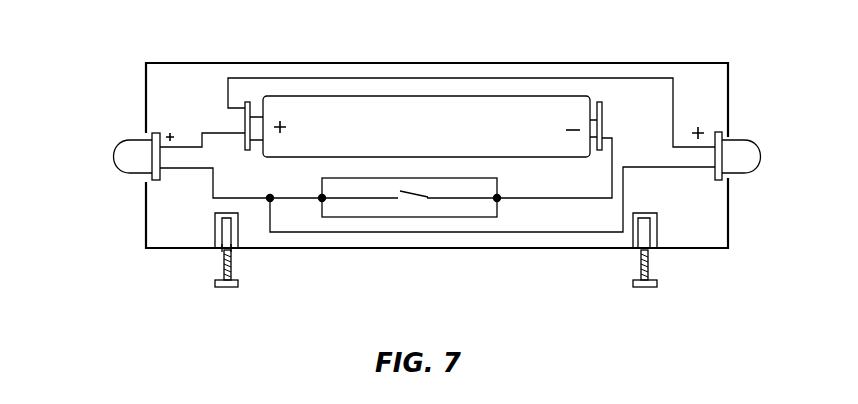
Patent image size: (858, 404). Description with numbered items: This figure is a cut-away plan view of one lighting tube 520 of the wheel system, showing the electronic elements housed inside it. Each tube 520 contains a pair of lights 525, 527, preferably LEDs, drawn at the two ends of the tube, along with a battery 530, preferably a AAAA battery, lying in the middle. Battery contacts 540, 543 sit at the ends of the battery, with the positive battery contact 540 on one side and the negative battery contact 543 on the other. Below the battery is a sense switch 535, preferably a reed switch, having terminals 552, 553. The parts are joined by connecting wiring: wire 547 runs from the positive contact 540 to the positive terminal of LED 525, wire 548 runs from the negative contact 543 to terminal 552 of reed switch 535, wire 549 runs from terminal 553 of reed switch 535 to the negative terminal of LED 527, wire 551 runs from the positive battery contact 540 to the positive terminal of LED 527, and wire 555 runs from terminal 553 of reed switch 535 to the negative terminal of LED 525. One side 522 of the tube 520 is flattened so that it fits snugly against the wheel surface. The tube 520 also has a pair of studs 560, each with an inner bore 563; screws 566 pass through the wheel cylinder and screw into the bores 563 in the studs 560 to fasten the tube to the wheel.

The tube 520 is at (550, 62).
The flattened side 522 is at (347, 249).
The light (LED) 525 is at (753, 174).
The light (LED) 527 is at (115, 143).
The battery 530 is at (424, 130).
The sense switch 535 is at (457, 218).
The positive battery contact 540 is at (242, 112).
The negative battery contact 543 is at (603, 115).
The wire 547 is at (428, 77).
The wire 548 is at (588, 200).
The wire 549 is at (212, 190).
The wire 551 is at (210, 132).
The terminal of reed switch 552 is at (499, 194).
The terminal of reed switch 553 is at (300, 196).
The wire 555 is at (513, 233).
The stud 560 is at (214, 233).
The inner bore 563 is at (230, 248).
The screw 566 is at (221, 288).